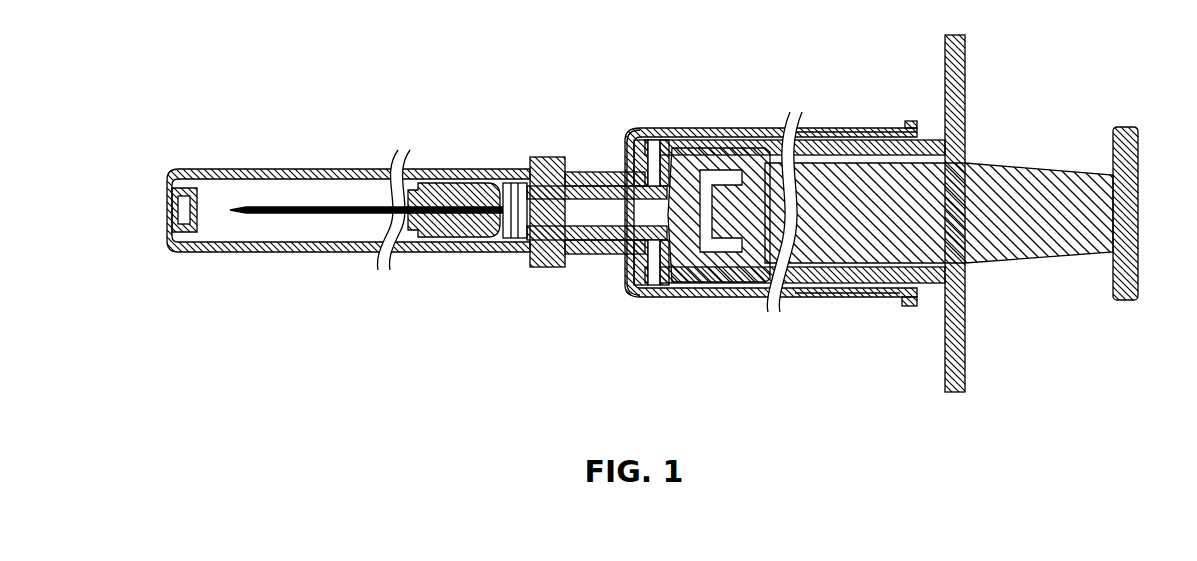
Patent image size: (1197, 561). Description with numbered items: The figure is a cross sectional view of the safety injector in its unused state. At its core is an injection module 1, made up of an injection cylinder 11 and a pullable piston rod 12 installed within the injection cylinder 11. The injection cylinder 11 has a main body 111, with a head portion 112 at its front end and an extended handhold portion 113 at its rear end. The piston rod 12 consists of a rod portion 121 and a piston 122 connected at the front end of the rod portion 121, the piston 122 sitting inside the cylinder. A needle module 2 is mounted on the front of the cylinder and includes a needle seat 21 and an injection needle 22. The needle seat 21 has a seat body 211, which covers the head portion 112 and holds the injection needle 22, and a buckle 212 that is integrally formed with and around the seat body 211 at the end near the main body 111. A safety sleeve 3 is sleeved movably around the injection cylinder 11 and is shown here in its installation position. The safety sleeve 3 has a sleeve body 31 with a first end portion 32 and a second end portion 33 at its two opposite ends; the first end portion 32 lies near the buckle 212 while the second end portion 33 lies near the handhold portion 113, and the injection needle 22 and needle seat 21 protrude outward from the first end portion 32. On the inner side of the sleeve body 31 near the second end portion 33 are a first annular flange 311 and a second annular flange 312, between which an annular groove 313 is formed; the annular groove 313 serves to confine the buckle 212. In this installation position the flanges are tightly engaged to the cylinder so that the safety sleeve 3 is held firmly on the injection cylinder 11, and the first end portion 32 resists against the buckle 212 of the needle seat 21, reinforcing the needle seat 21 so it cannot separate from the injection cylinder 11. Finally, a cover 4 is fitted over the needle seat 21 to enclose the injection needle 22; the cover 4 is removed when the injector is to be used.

The injection module 1 is at (652, 199).
The injection cylinder 11 is at (837, 210).
The main body 111 is at (752, 150).
The head portion 112 is at (647, 140).
The extended handhold portion 113 is at (958, 352).
The pullable piston rod 12 is at (902, 238).
The rod portion 121 is at (845, 246).
The piston 122 is at (690, 262).
The needle module 2 is at (537, 207).
The needle seat 21 is at (537, 280).
The seat body 211 is at (502, 252).
The buckle 212 is at (597, 256).
The injection needle 22 is at (288, 214).
The safety sleeve 3 is at (766, 159).
The sleeve body 31 is at (697, 130).
The first annular flange 311 is at (880, 137).
The second annular flange 312 is at (828, 140).
The annular groove 313 is at (848, 135).
The first end portion 32 is at (626, 142).
The second end portion 33 is at (913, 122).
The cover 4 is at (447, 166).